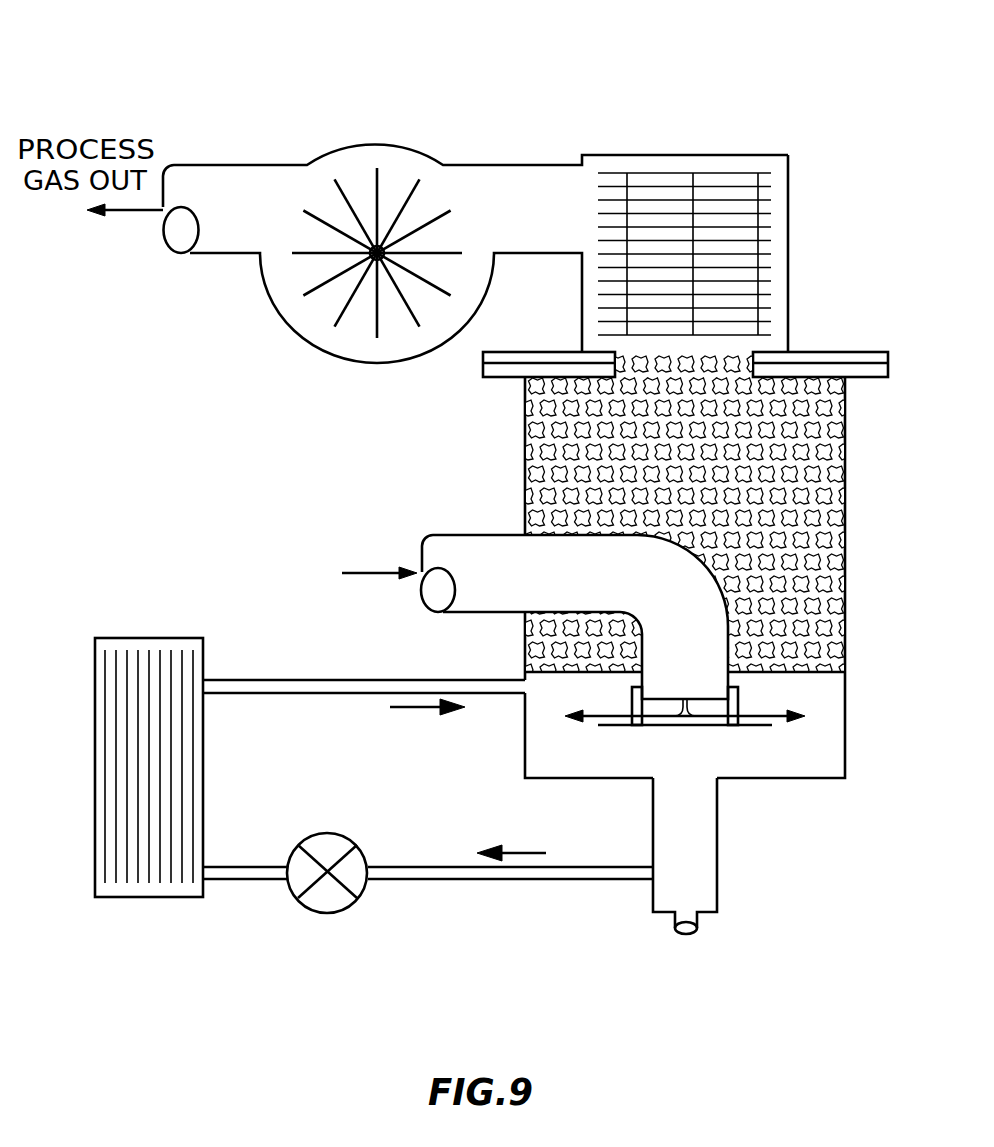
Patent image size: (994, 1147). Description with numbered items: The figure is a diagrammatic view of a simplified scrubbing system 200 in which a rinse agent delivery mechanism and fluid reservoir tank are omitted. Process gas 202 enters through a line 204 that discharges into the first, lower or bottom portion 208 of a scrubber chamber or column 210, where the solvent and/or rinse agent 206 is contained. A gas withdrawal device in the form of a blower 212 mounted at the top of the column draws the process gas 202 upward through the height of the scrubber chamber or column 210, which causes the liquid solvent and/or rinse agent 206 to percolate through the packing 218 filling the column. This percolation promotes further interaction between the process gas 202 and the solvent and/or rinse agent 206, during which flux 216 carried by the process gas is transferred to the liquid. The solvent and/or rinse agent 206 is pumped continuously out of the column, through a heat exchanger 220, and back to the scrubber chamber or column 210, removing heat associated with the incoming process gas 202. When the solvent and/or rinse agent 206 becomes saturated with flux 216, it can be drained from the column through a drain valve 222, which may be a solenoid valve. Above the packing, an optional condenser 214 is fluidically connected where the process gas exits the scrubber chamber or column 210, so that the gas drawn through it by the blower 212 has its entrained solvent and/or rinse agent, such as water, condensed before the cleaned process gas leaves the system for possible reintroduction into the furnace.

The gas treatment system 200 is at (722, 85).
The process gas 202 is at (383, 570).
The line 204 is at (473, 615).
The solvent and/or rinse agent 206 is at (825, 692).
The first, lower or bottom portion 208 is at (847, 748).
The scrubber chamber or column 210 is at (847, 453).
The blower 212 is at (372, 330).
The condenser 214 is at (778, 258).
The flux 216 is at (812, 535).
The packing 218 is at (563, 478).
The heat exchanger 220 is at (153, 877).
The drain valve 222 is at (697, 923).